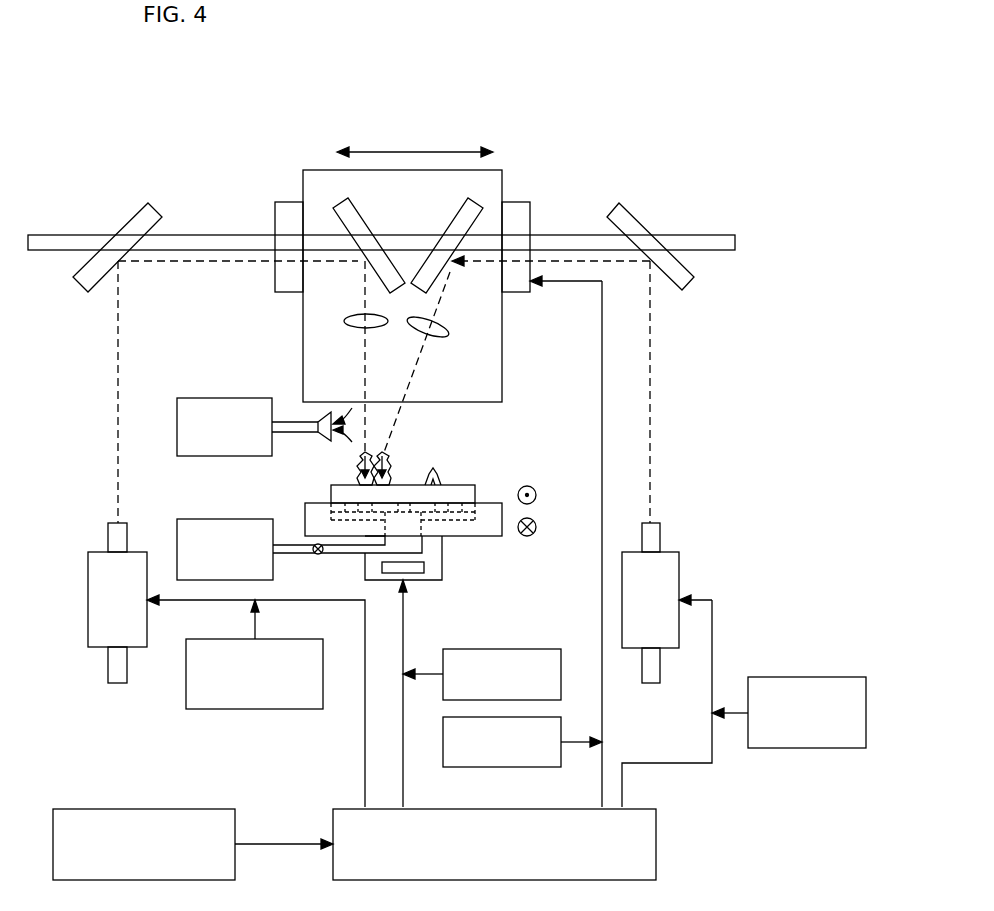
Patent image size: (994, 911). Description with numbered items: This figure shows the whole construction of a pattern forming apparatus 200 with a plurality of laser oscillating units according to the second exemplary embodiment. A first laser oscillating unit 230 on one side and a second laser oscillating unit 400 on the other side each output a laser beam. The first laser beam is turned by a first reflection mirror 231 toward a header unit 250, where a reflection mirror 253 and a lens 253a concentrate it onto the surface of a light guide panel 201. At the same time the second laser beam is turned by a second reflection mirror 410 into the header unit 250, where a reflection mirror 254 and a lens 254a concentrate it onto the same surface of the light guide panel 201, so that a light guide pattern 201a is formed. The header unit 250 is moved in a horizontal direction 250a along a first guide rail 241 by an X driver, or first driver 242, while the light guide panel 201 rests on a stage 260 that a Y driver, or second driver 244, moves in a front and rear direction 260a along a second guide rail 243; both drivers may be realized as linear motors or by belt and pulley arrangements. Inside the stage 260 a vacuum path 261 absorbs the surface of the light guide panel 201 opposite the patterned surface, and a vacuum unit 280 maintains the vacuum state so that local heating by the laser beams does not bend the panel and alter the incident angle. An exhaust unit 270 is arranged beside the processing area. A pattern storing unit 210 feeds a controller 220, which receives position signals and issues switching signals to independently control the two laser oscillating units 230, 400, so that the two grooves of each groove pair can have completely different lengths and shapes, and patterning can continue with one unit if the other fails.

The laser processing apparatus 200 is at (624, 101).
The first guide rail 241 is at (50, 234).
The first reflection mirror 231 is at (134, 218).
The second reflection mirror 410 is at (640, 213).
The header unit 250 is at (503, 185).
The horizontal direction 250a is at (414, 152).
The X driver (first driver) 242 is at (533, 215).
The reflection mirror 253 is at (359, 215).
The reflection mirror 254 is at (453, 218).
The lens 253a is at (353, 314).
The lens 254a is at (447, 334).
The exhaust unit 270 is at (230, 397).
The light guide panel 201 is at (466, 484).
The light guide pattern 201a is at (435, 466).
The stage 260 is at (308, 502).
The front and rear direction 260a is at (537, 526).
The vacuum path 261 is at (405, 525).
The Y driver (second driver) 244 is at (442, 562).
The second guide rail 243 is at (427, 574).
The vacuum unit 280 is at (232, 519).
The first laser oscillating unit 230 is at (86, 598).
The second laser oscillating unit 400 is at (681, 558).
The pattern storing unit 210 is at (145, 808).
The controller 220 is at (657, 843).